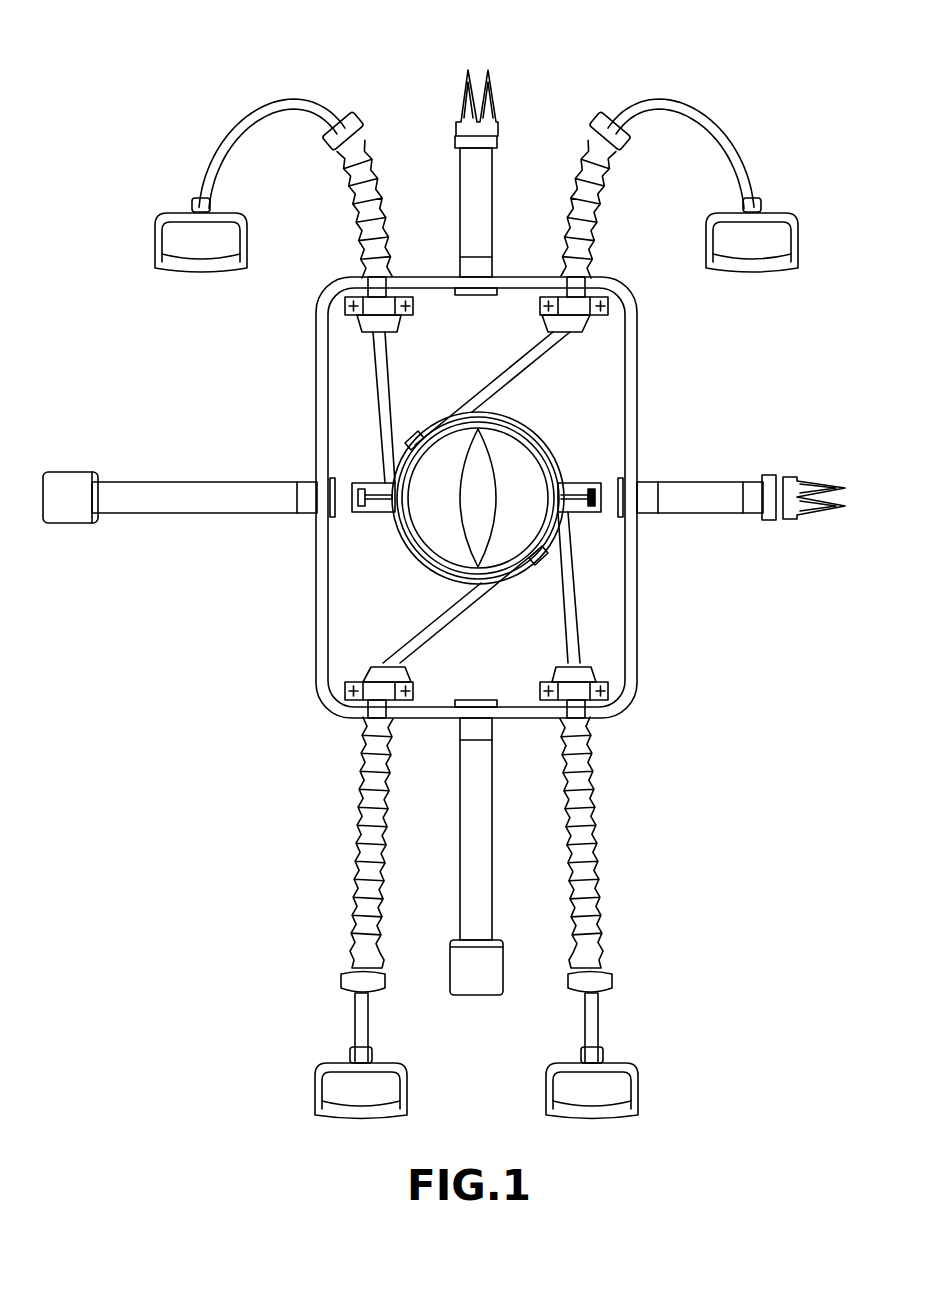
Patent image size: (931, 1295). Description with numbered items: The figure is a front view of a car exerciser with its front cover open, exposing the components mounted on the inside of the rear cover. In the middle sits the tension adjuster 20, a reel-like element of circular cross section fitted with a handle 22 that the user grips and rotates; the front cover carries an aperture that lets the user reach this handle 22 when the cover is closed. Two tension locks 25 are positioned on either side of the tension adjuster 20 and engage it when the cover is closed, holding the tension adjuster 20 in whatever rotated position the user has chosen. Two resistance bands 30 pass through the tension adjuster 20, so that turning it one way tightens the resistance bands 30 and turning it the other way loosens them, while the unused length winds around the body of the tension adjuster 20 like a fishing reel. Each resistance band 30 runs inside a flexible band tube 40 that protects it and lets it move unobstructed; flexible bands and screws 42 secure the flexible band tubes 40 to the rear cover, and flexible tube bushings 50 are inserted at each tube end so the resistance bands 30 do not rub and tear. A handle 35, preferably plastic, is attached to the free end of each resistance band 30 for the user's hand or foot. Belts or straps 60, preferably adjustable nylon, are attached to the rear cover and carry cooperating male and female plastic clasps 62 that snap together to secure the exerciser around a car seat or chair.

The tension adjuster 20 is at (548, 546).
The handle 22 is at (472, 520).
The tension lock 25 is at (368, 482).
The resistance band 30 is at (380, 372).
The handle 35 is at (160, 222).
The flexible band tube 40 is at (358, 188).
The flexible bands and screws 42 is at (345, 305).
The flexible tube bushing 50 is at (372, 323).
The belt or strap 60 is at (464, 178).
The clasp 62 is at (460, 102).